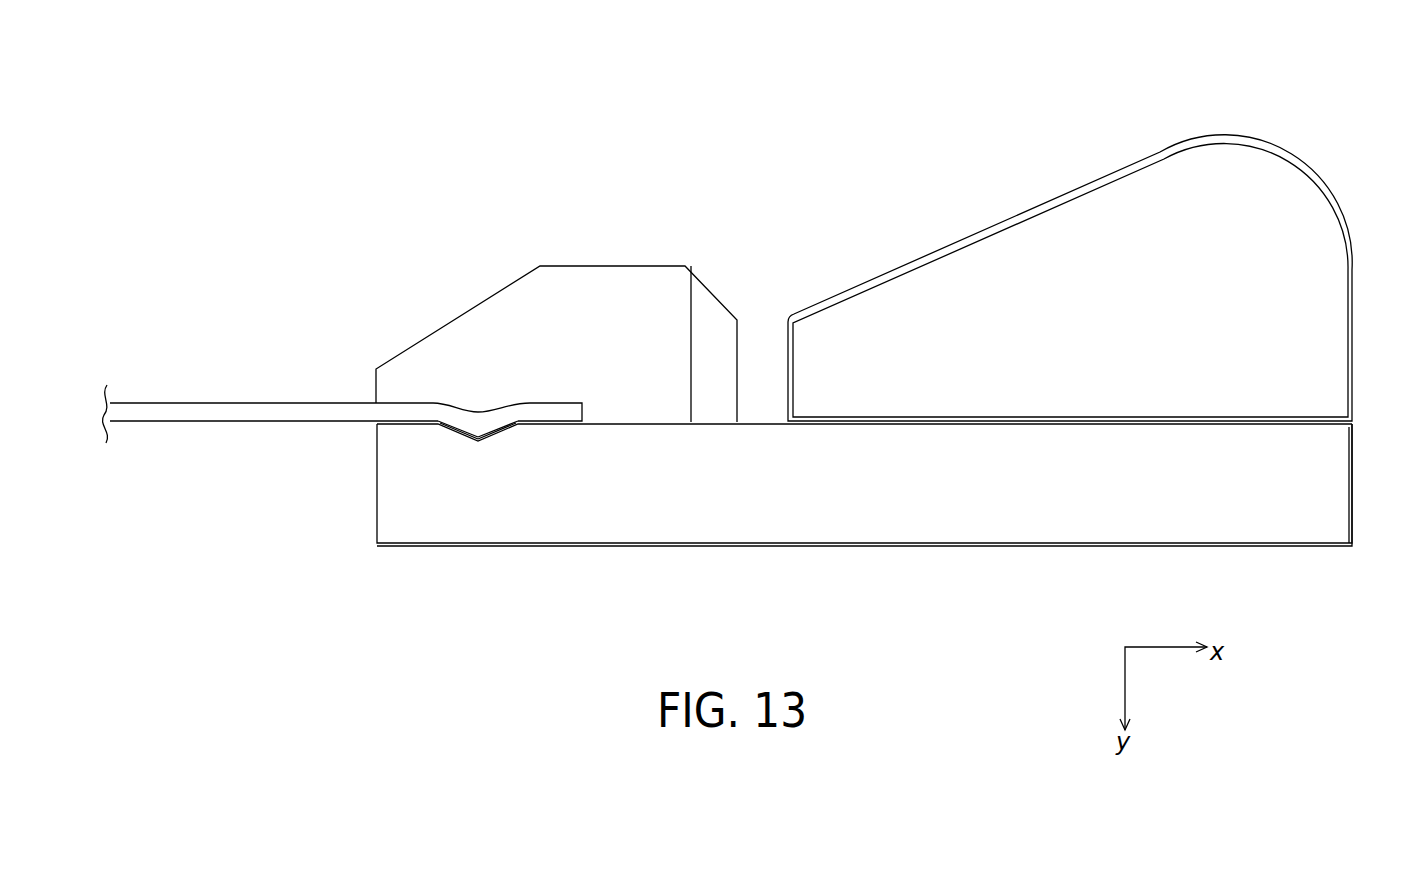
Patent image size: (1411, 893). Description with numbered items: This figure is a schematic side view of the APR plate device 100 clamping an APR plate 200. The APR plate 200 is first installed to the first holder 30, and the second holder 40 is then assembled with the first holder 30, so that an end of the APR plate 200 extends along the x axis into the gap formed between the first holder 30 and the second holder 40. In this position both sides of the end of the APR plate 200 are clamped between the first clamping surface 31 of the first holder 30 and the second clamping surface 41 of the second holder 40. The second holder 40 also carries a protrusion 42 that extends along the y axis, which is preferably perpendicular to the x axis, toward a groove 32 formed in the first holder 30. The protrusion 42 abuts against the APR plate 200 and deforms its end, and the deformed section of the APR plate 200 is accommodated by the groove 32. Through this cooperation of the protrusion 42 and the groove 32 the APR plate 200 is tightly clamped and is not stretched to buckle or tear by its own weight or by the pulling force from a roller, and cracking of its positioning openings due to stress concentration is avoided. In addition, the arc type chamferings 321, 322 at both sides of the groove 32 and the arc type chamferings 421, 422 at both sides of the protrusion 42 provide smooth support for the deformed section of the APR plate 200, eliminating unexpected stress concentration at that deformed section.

The APR plate device 100 is at (835, 146).
The APR plate 200 is at (265, 410).
The first holder 30 is at (864, 548).
The first clamping surface 31 is at (548, 425).
The groove 32 is at (458, 548).
The arc type chamfering 321 is at (447, 423).
The arc type chamfering 322 is at (515, 423).
The second holder 40 is at (551, 303).
The second clamping surface 41 is at (557, 402).
The protrusion 42 is at (447, 329).
The arc type chamfering 421 is at (450, 402).
The arc type chamfering 422 is at (527, 402).